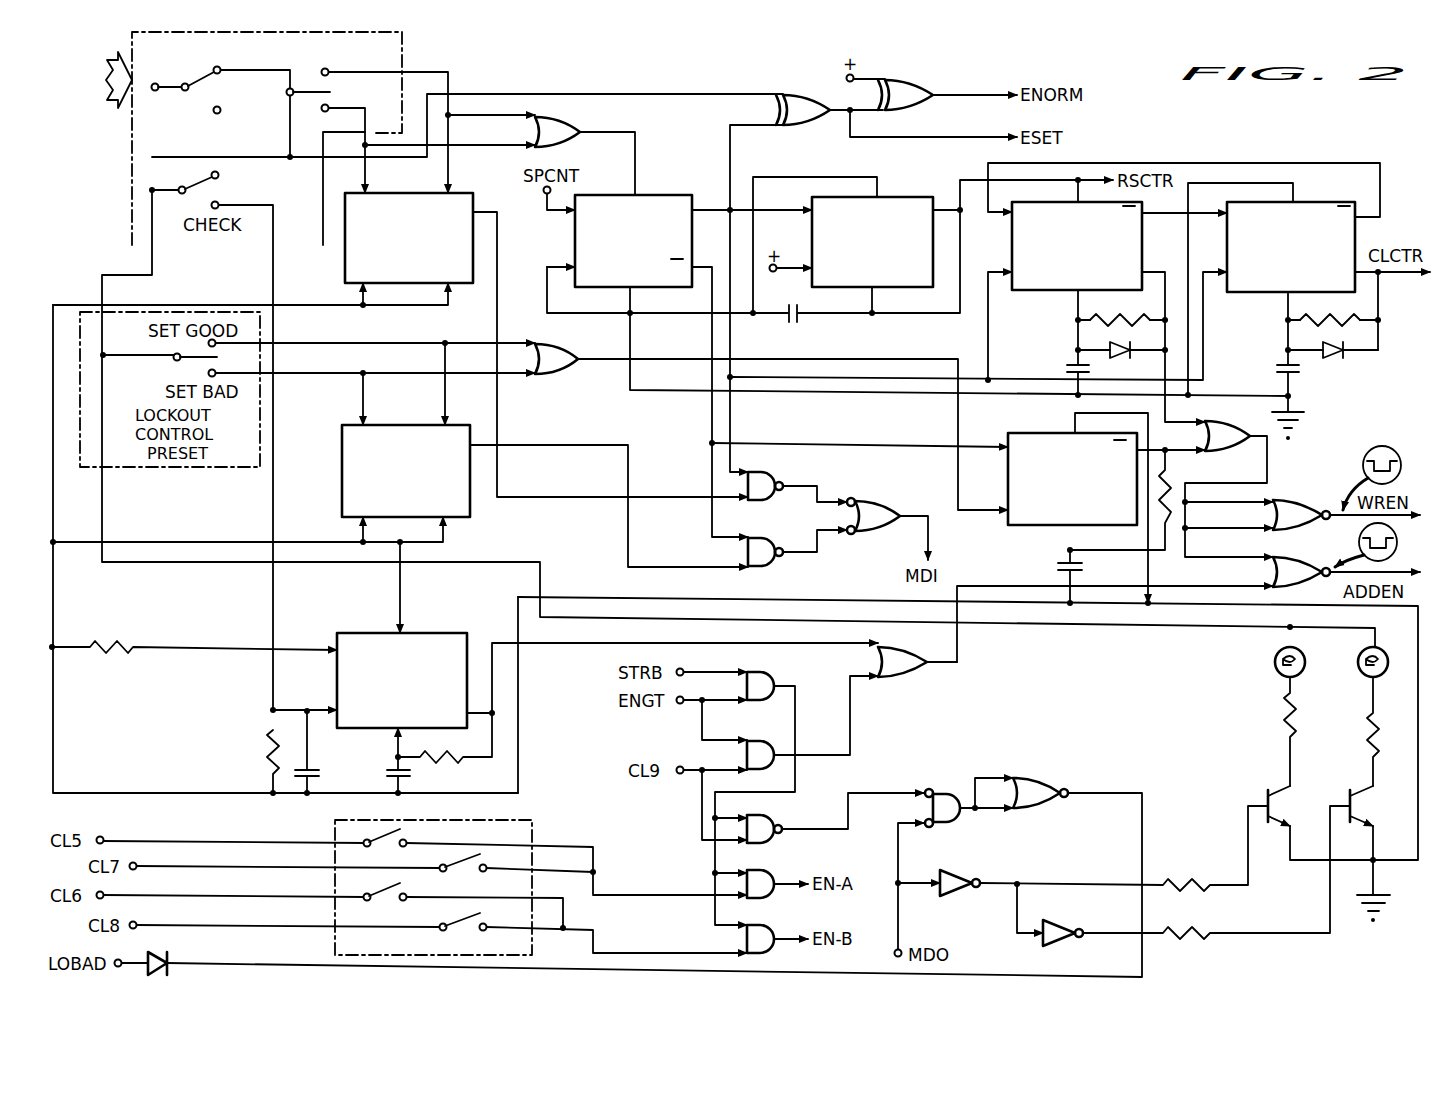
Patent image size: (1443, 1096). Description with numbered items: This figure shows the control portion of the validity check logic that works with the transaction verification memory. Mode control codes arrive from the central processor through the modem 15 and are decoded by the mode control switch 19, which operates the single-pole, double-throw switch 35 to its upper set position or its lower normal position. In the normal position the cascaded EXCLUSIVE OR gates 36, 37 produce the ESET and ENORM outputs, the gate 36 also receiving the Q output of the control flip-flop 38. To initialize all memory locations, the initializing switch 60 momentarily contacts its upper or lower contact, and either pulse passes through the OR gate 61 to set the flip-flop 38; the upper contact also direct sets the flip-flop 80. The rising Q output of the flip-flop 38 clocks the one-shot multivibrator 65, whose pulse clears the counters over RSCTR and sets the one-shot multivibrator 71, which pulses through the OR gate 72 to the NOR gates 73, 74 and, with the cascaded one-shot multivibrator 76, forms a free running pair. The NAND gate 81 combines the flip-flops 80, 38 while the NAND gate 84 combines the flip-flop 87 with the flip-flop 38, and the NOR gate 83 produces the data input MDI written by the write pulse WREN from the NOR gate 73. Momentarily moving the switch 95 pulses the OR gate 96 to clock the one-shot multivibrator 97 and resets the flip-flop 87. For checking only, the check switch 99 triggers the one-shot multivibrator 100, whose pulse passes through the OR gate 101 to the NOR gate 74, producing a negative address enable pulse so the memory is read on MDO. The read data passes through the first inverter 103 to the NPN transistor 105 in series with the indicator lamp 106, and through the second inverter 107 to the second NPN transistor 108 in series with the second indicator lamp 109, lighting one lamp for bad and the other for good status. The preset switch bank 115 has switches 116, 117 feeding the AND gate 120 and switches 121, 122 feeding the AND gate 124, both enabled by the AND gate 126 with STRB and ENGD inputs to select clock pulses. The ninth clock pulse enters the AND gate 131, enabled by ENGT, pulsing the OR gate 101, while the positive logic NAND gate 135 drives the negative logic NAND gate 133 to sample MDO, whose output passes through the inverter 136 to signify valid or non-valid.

The modem 15 is at (94, 80).
The mode control switch 19 is at (402, 40).
The single-pole, double-throw switch 35 is at (199, 88).
The initializing switch 60 is at (332, 92).
The check switch 99 is at (199, 182).
The switch 95 is at (195, 360).
The flip-flop 80 is at (458, 193).
The flip-flop 87 is at (455, 425).
The OR gate 61 is at (578, 122).
The control flip-flop 38 is at (680, 195).
The EXCLUSIVE OR gate 36 is at (822, 93).
The EXCLUSIVE OR gate 37 is at (920, 80).
The one-shot multivibrator 65 is at (895, 197).
The one-shot multivibrator 71 is at (1142, 238).
The one-shot multivibrator 76 is at (1310, 202).
The OR gate 96 is at (565, 342).
The one-shot multivibrator 97 is at (1022, 433).
The OR gate 72 is at (1222, 458).
The NOR gate 73 is at (1305, 500).
The NOR gate 74 is at (1300, 558).
The NAND gate 81 is at (770, 472).
The NAND gate 84 is at (770, 538).
The NOR gate 83 is at (880, 532).
The one-shot multivibrator 100 is at (430, 633).
The OR gate 101 is at (918, 675).
The AND gate 126 is at (770, 672).
The AND gate 131 is at (772, 744).
The positive logic NAND gate 135 is at (768, 815).
The negative logic NAND gate 133 is at (946, 792).
The inverter 136 is at (1045, 780).
The AND gate 120 is at (770, 870).
The AND gate 124 is at (770, 925).
The first inverter 103 is at (995, 863).
The second inverter 107 is at (1062, 920).
The NPN transistor 105 is at (1262, 792).
The indicator lamp 106 is at (1277, 674).
The second NPN transistor 108 is at (1344, 792).
The second indicator lamp 109 is at (1386, 672).
The preset switch bank 115 is at (338, 946).
The switch 116 is at (388, 838).
The switch 117 is at (466, 863).
The switch 121 is at (388, 892).
The switch 122 is at (466, 922).